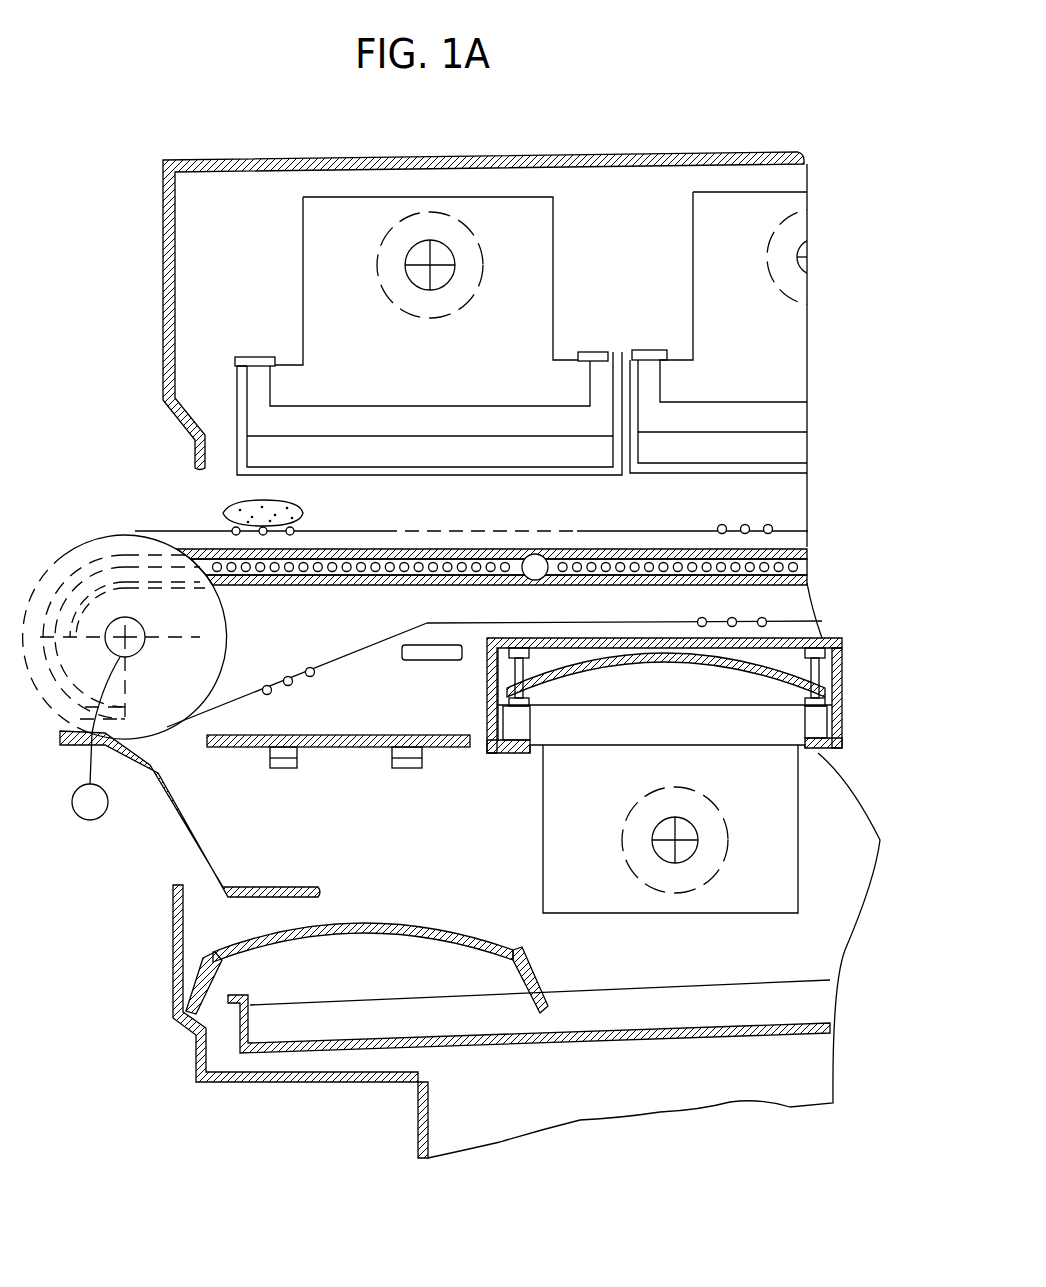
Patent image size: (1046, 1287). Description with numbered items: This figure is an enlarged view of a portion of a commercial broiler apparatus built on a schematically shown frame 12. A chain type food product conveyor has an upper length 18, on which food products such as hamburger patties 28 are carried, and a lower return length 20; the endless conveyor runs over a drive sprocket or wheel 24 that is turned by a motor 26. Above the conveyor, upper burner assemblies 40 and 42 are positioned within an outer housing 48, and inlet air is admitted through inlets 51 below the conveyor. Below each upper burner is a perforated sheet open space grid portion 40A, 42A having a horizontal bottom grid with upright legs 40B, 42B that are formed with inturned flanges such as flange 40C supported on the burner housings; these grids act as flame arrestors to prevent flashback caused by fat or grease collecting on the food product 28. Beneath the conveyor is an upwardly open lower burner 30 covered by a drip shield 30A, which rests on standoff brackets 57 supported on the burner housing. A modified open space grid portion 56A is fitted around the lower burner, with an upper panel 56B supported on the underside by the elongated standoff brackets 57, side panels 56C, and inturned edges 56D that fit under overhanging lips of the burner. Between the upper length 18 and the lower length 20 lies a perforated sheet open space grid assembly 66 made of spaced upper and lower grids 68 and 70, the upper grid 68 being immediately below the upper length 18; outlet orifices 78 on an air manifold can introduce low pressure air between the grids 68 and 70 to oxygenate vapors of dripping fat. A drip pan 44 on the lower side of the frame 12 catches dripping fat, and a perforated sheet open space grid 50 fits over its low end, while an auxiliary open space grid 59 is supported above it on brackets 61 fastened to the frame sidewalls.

The frame 12 is at (297, 1080).
The upper length 18 is at (740, 520).
The lower length 20 is at (728, 617).
The drive sprocket 24 is at (202, 623).
The motor 26 is at (83, 820).
The hamburger patties 28 is at (295, 505).
The lower burner 30 is at (780, 853).
The drip shield 30A is at (630, 670).
The upper burner assembly 40 is at (535, 243).
The open space grid portion 40A is at (477, 475).
The upright leg 40B is at (233, 440).
The inturned flange 40C is at (263, 357).
The upper burner assembly 42 is at (693, 226).
The open space grid portion 42A is at (725, 460).
The upright leg 42B is at (640, 392).
The drip pan 44 is at (443, 1048).
The outer housing 48 is at (388, 160).
The open space grid 50 is at (442, 927).
The inlet 51 is at (408, 650).
The open space grid portion 56A is at (829, 626).
The upper panel 56B is at (625, 636).
The side panel 56C is at (487, 688).
The inturned edge 56D is at (507, 755).
The standoff bracket 57 is at (842, 668).
The auxiliary open space grid 59 is at (352, 735).
The bracket 61 is at (283, 770).
The open space grid assembly 66 is at (462, 540).
The upper open space grid 68 is at (570, 557).
The lower open space grid 70 is at (405, 587).
The outlet orifice 78 is at (607, 567).